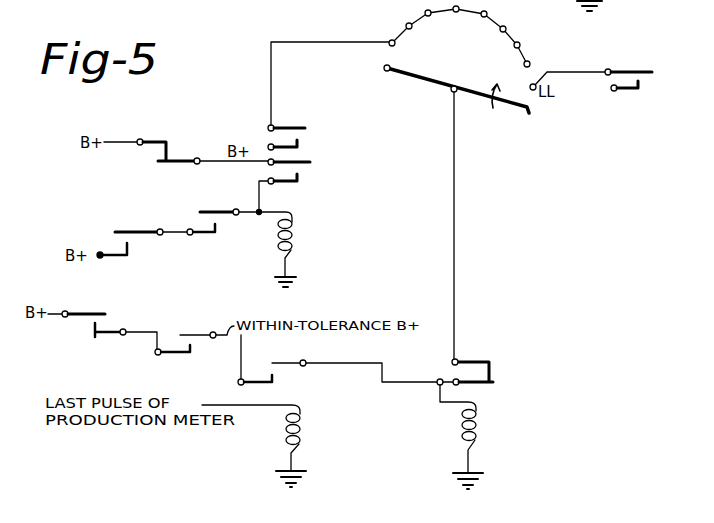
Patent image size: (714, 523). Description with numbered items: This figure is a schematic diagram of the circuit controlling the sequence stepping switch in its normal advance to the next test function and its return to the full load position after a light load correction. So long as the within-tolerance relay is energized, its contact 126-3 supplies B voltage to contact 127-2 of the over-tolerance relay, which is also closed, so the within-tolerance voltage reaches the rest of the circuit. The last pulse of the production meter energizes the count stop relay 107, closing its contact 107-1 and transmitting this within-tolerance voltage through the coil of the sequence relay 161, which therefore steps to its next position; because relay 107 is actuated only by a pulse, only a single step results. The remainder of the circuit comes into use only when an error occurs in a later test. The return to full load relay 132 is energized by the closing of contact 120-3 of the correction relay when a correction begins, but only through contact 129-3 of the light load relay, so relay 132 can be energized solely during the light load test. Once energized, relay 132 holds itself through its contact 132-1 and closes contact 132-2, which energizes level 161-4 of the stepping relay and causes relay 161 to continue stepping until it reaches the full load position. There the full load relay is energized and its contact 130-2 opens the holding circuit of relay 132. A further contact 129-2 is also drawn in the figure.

The level of sequence stepping relay 161-4 is at (441, 210).
The relay contact 129-2 is at (641, 87).
The contact of full load relay 130-2 is at (169, 152).
The contact of return to full load relay 132-2 is at (300, 146).
The holding contact of return to full load relay 132-1 is at (300, 180).
The contact of light load test relay 129-3 is at (217, 228).
The contact of correction relay 120-3 is at (129, 246).
The return to full load relay 132 is at (297, 249).
The contact of within-tolerance relay 126-3 is at (93, 326).
The contact of over-tolerance relay 127-2 is at (192, 349).
The contact of count stop relay 107-1 is at (274, 379).
The sequence stepping relay 161 is at (462, 441).
The count stop relay 107 is at (300, 437).